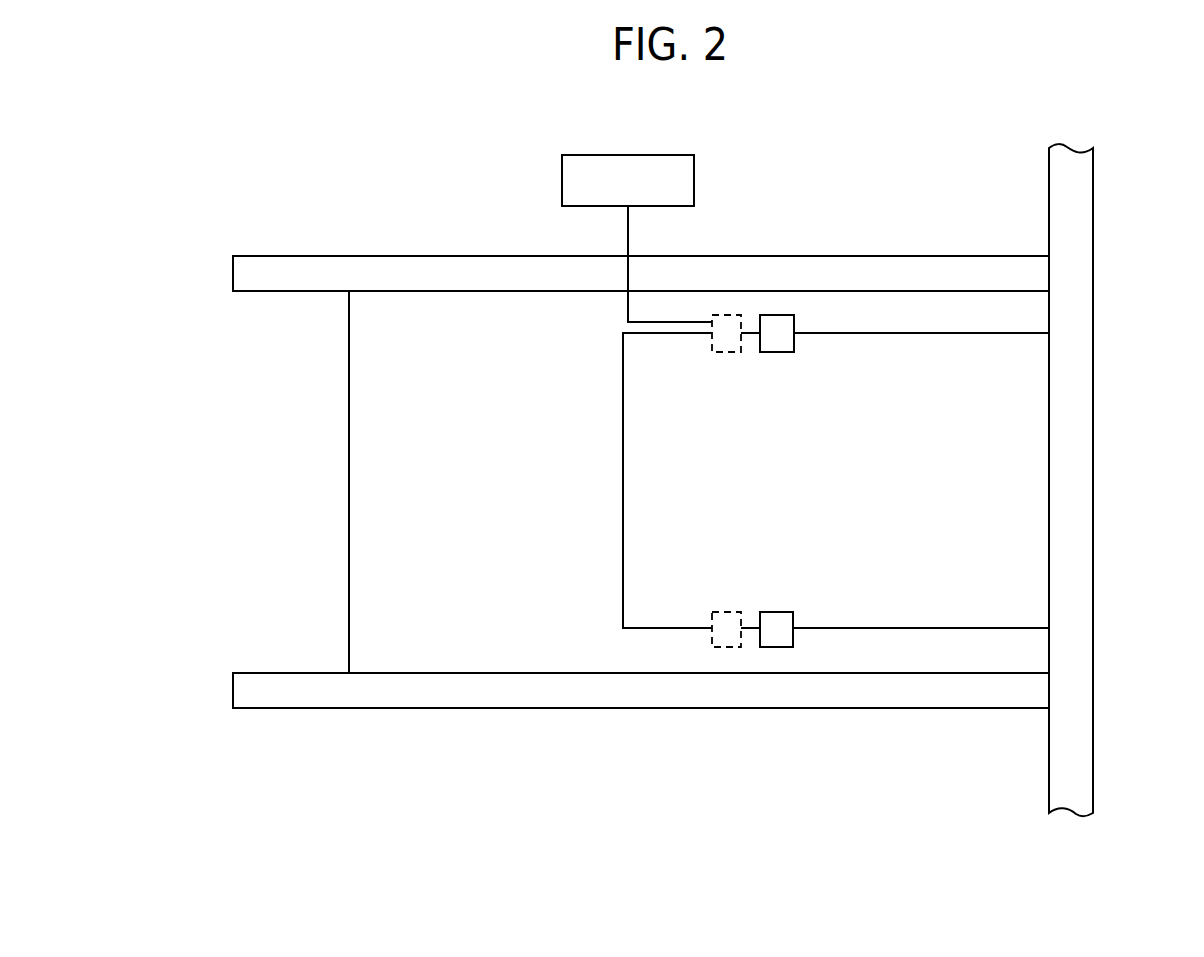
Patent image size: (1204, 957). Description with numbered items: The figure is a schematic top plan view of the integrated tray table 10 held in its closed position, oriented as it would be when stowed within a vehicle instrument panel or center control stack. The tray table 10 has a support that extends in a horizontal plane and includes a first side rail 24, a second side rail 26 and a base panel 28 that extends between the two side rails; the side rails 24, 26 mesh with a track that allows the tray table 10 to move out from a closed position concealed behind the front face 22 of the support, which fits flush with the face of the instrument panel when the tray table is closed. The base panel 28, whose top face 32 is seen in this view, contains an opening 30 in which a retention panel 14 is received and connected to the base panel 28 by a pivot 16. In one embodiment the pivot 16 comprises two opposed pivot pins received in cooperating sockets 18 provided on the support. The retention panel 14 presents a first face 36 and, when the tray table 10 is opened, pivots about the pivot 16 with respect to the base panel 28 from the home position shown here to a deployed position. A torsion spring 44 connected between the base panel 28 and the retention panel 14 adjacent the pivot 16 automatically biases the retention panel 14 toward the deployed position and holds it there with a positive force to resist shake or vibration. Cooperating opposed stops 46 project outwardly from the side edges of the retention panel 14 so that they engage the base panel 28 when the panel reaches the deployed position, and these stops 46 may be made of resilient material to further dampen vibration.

The integrated tray table 10 is at (243, 153).
The retention panel 14 is at (862, 469).
The pivot 16 is at (742, 327).
The sockets 18 is at (751, 324).
The front face 22 is at (1093, 555).
The first side rail 24 is at (399, 256).
The second side rail 26 is at (304, 693).
The base panel 28 is at (488, 481).
The opening 30 is at (623, 518).
The top face 32 is at (382, 580).
The first face 36 is at (1023, 403).
The torsion spring 44 is at (584, 155).
The stops 46 is at (781, 322).